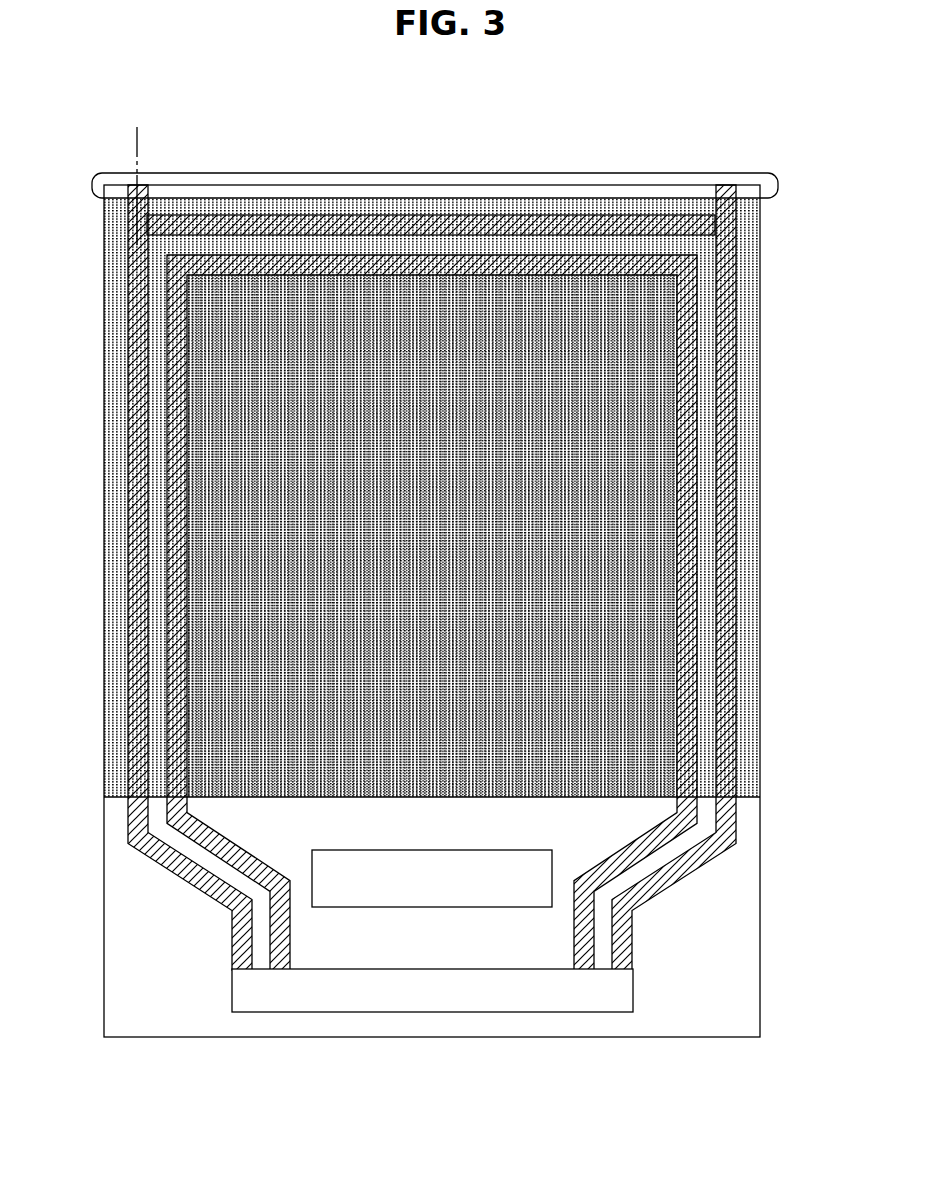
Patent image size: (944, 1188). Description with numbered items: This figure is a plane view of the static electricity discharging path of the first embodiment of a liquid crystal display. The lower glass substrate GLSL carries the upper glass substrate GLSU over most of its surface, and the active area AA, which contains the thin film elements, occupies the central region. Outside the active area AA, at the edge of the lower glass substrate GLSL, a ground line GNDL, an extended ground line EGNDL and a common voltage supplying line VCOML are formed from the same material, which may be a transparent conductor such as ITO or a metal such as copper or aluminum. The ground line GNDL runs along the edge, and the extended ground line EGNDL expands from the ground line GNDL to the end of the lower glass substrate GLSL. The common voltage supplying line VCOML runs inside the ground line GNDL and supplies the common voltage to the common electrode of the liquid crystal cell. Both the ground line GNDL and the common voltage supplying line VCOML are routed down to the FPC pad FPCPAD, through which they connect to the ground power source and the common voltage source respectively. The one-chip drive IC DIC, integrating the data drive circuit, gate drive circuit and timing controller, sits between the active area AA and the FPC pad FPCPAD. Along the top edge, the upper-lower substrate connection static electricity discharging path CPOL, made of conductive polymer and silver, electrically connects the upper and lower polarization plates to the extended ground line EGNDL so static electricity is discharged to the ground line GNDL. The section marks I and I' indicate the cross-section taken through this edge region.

The upper-lower substrate connection static electricity discharging path CPOL is at (733, 178).
The extended ground line EGNDL is at (735, 205).
The ground line GNDL is at (728, 585).
The common voltage supplying line VCOML is at (690, 657).
The upper glass substrate GLSU is at (748, 798).
The lower glass substrate GLSL is at (760, 915).
The active area AA is at (450, 554).
The one-chip drive IC DIC is at (432, 878).
The FPC pad FPCPAD is at (432, 990).
The section line I is at (98, 235).
The section line I' is at (98, 185).